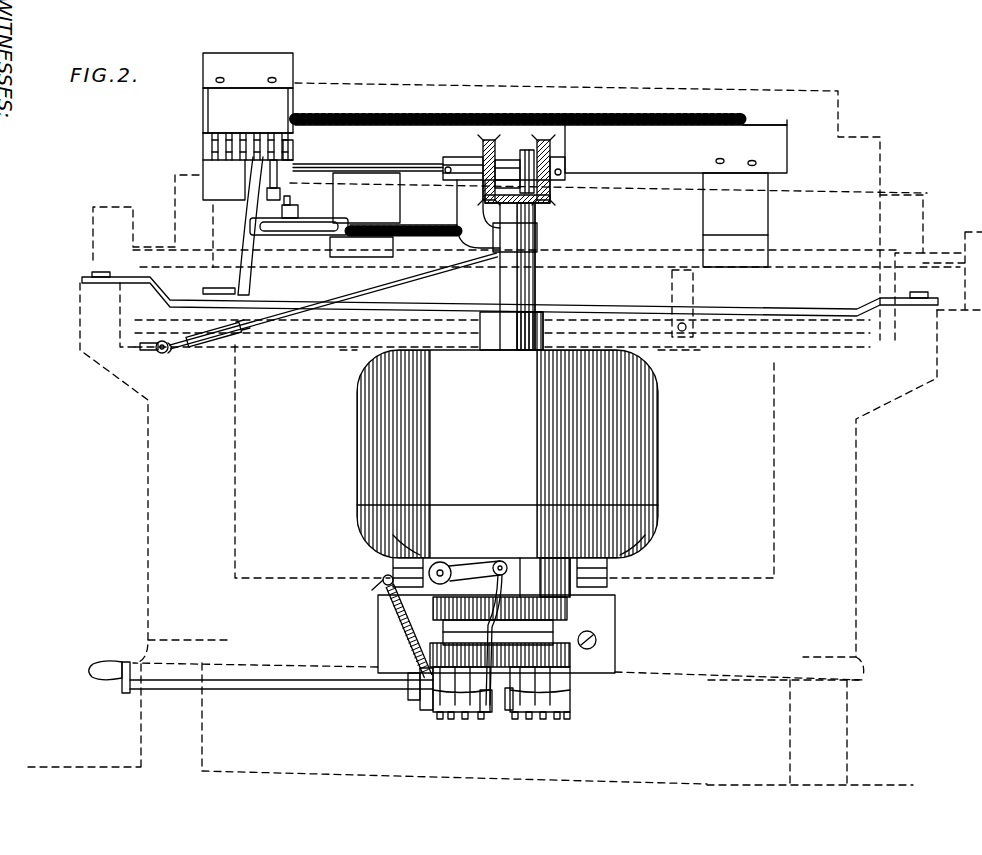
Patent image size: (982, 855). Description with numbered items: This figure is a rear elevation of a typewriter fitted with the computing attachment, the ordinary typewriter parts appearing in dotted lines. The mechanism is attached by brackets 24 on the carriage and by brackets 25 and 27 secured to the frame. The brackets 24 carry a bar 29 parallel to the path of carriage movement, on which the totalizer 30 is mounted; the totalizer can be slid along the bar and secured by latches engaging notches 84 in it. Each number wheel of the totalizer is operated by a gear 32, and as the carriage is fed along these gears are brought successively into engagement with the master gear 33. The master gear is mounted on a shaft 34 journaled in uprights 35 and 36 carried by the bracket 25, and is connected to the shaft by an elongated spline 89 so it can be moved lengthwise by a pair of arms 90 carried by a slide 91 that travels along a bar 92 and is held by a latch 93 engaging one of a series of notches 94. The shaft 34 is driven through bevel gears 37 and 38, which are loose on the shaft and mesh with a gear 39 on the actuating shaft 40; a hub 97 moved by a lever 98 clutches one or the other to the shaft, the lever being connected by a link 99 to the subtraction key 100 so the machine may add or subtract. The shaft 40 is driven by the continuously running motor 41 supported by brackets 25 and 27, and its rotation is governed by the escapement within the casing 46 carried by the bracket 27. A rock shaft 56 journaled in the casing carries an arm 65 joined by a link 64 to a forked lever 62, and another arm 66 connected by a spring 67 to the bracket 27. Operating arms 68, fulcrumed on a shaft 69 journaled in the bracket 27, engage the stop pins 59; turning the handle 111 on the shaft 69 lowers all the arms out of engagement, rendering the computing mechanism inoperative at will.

The brackets 24 is at (400, 207).
The bracket 25 is at (711, 317).
The bracket 27 is at (387, 629).
The bar 29 is at (676, 146).
The totalizer 30 is at (266, 53).
The gears 32 is at (208, 147).
The master gear 33 is at (285, 147).
The shaft 34 is at (390, 169).
The upright 35 is at (234, 235).
The upright 36 is at (538, 237).
The bevel gear 37 is at (483, 152).
The bevel gear 38 is at (548, 153).
The bevel gear 39 is at (504, 157).
The actuating shaft 40 is at (535, 213).
The motor 41 is at (507, 473).
The casing 46 is at (550, 628).
The rock shaft 56 is at (444, 561).
The stop pins 59 is at (507, 688).
The forked lever 62 is at (483, 710).
The link 64 is at (491, 630).
The arm 65 is at (495, 560).
The arm 66 is at (388, 575).
The spring 67 is at (392, 605).
The operating arms 68 is at (572, 697).
The shaft 69 is at (281, 697).
The notches 84 is at (422, 114).
The elongated groove or spline 89 is at (345, 163).
The arms 90 is at (273, 163).
The slide 91 is at (282, 236).
The bar 92 is at (365, 240).
The latch 93 is at (289, 203).
The notches 94 is at (372, 223).
The hub 97 is at (528, 150).
The lever 98 is at (552, 192).
The link 99 is at (264, 318).
The subtraction key 100 is at (166, 354).
The handle 111 is at (105, 682).